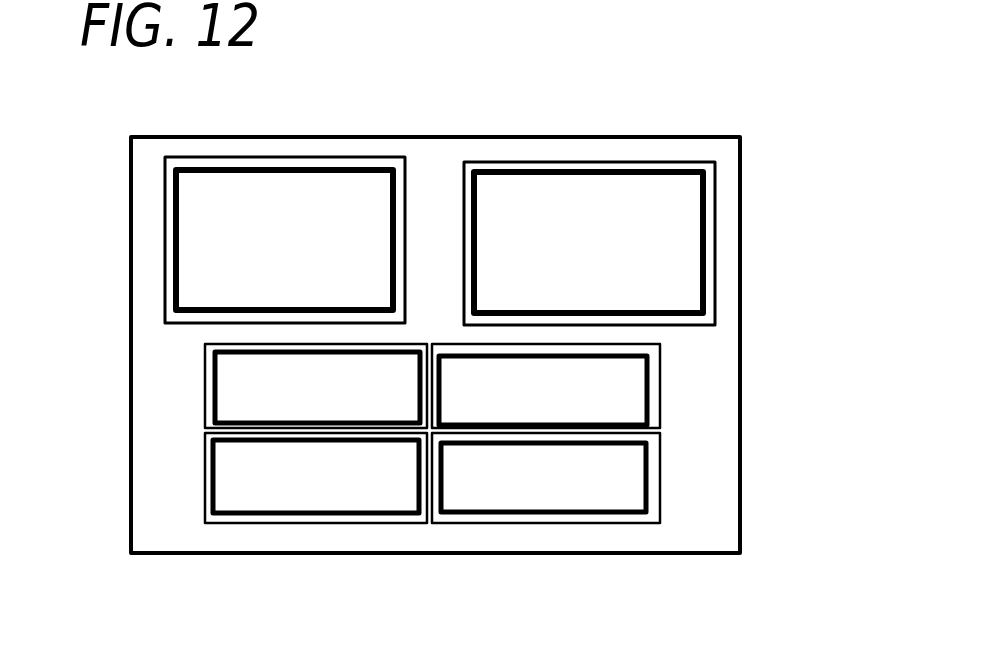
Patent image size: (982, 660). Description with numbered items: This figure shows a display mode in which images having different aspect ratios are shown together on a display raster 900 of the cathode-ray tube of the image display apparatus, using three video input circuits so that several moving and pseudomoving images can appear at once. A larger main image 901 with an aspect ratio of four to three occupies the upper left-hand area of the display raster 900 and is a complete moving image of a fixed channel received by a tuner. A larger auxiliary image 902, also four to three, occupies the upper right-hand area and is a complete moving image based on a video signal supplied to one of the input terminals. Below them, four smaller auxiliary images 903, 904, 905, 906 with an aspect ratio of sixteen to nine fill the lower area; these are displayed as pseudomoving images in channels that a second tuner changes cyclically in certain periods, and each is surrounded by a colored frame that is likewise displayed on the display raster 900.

The display raster 900 is at (585, 555).
The main image 901 is at (303, 157).
The auxiliary image 902 is at (590, 162).
The auxiliary image 903 is at (203, 378).
The auxiliary image 904 is at (660, 388).
The auxiliary image 905 is at (203, 472).
The auxiliary image 906 is at (660, 481).